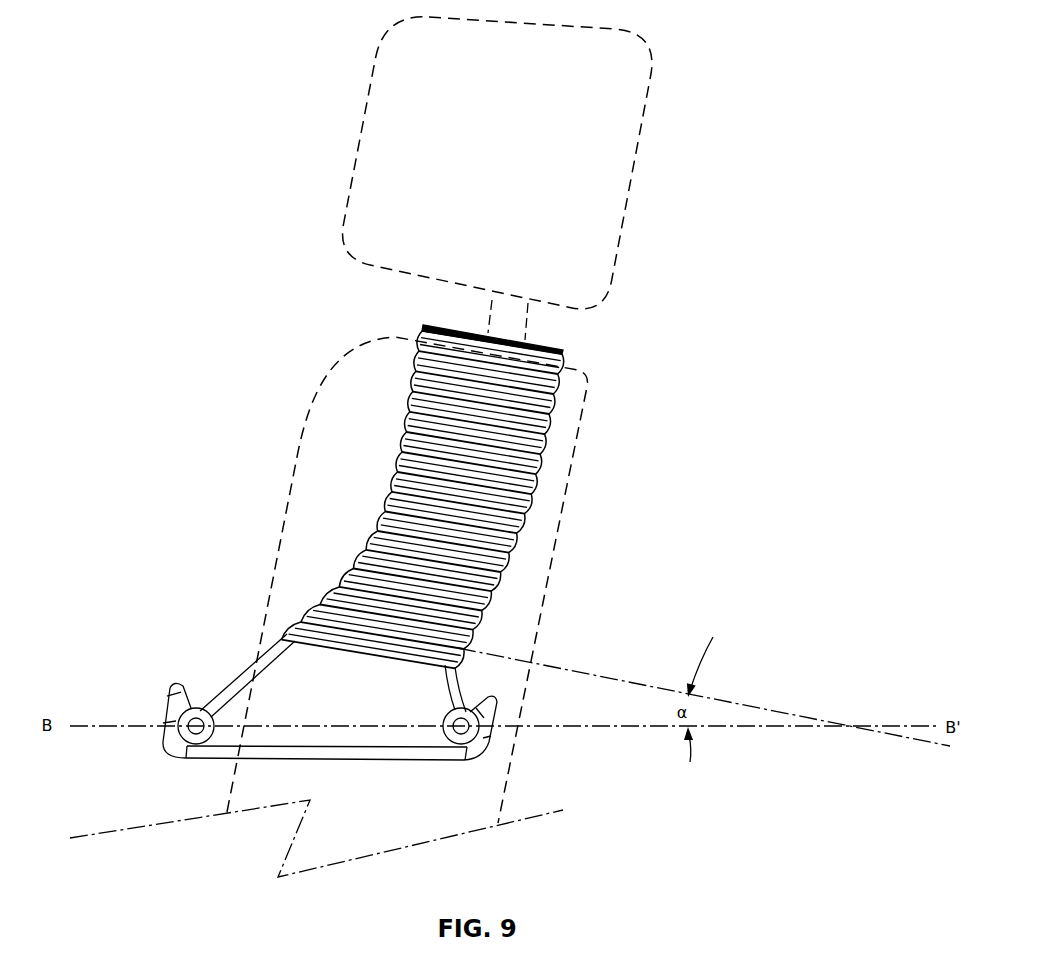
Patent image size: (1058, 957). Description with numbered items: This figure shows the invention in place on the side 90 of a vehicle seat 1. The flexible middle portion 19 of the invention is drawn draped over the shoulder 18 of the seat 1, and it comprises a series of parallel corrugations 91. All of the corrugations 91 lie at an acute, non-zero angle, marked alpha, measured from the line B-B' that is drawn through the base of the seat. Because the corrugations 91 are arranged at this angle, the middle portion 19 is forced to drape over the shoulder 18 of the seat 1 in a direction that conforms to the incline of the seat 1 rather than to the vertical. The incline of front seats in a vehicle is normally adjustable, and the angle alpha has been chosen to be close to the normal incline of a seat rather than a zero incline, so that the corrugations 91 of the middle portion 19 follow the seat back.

The vehicle seat 1 is at (262, 338).
The shoulder of the seat 18 is at (587, 387).
The flexible middle portion 19 is at (441, 526).
The side of the vehicle seat 90 is at (329, 452).
The parallel corrugations 91 is at (347, 573).